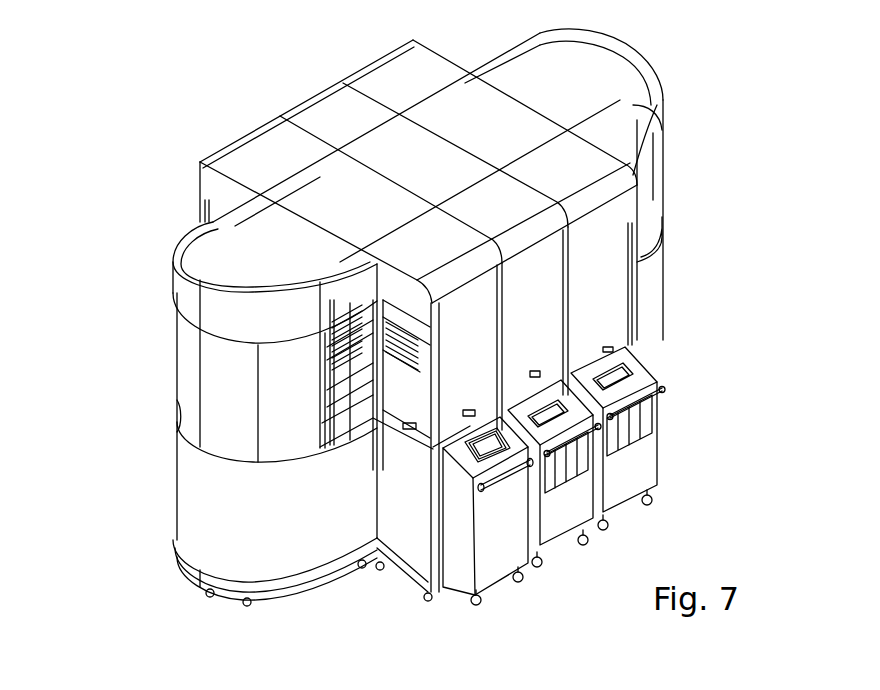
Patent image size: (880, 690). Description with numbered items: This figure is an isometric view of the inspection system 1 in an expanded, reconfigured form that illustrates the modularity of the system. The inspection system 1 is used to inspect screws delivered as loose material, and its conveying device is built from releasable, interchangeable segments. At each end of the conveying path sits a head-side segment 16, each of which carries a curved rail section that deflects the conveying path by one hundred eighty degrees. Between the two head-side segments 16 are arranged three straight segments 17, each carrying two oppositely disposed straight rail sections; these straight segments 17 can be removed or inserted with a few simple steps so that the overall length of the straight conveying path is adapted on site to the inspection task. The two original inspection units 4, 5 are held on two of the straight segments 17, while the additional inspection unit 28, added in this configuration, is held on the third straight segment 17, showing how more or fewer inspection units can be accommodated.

The inspection system 1 is at (139, 335).
The inspection unit 4 is at (539, 626).
The inspection unit 5 is at (558, 515).
The head-side segment 16 is at (697, 142).
The straight segment 17 is at (345, 40).
The additional inspection unit 28 is at (635, 473).